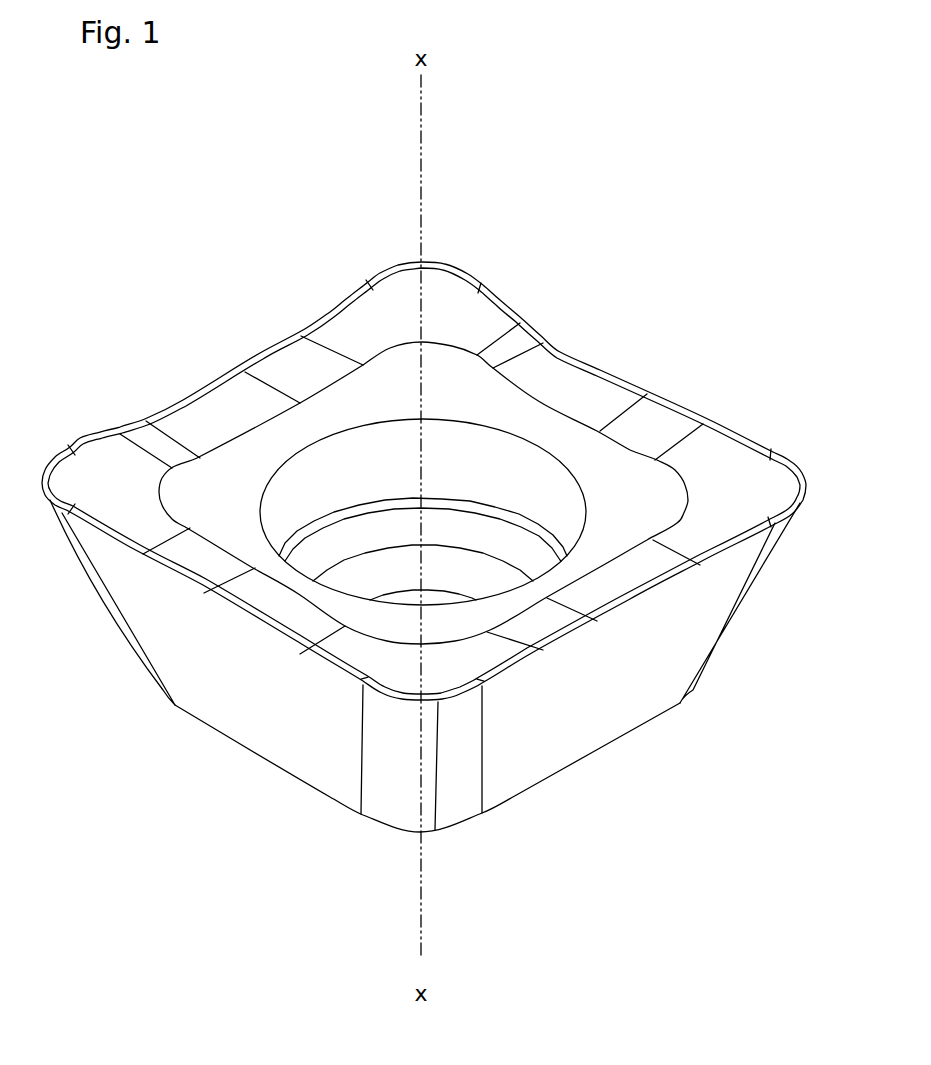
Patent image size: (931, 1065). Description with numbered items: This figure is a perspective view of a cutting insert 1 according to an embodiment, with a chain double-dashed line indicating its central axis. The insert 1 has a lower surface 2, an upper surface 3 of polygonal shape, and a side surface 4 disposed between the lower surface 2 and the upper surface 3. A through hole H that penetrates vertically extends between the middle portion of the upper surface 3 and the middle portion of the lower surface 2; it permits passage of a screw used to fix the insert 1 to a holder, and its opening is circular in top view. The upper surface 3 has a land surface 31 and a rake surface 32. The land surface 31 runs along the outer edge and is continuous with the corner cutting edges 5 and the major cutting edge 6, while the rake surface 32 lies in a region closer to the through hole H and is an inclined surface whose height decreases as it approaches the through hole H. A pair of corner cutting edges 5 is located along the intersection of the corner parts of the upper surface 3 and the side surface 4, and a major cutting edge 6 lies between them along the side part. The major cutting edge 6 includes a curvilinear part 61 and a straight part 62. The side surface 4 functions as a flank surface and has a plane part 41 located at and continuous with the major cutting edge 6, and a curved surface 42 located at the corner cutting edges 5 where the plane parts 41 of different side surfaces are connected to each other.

The cutting insert 1 is at (513, 247).
The lower surface 2 is at (313, 792).
The upper surface 3 is at (672, 283).
The land surface 31 is at (700, 420).
The rake surface 32 is at (587, 404).
The side surface 4 is at (707, 788).
The plane part 41 is at (598, 700).
The curved surface 42 is at (470, 759).
The corner cutting edge 5 is at (413, 698).
The major cutting edge 6 is at (147, 810).
The curvilinear part 61 is at (233, 622).
The straight part 62 is at (110, 553).
The through hole H is at (374, 447).